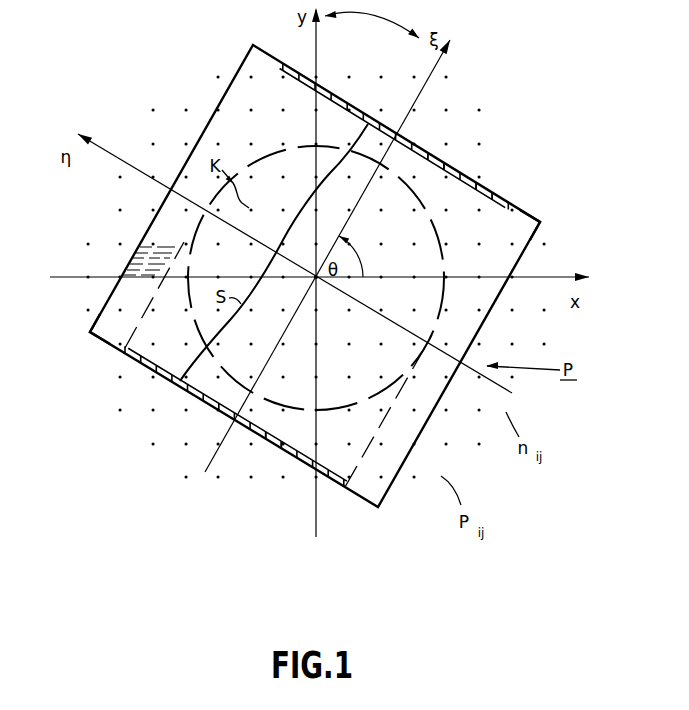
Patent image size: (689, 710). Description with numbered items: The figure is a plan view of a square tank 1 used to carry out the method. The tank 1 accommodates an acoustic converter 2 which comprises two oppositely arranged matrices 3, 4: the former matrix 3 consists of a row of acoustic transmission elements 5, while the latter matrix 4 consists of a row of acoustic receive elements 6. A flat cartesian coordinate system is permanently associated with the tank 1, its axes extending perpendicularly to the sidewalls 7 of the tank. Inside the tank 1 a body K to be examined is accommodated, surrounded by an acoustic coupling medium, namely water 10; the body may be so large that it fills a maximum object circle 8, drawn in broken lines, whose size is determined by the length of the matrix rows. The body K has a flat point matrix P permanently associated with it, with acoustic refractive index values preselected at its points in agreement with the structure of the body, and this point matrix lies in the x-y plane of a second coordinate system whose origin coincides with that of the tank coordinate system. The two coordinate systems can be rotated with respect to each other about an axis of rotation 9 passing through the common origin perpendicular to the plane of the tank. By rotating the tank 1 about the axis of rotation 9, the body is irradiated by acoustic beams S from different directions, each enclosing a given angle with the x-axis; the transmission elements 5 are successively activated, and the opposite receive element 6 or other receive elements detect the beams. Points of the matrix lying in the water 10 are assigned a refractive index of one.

The tank 1 is at (208, 124).
The acoustic converter 2 is at (329, 86).
The matrix 3 is at (343, 487).
The matrix 4 is at (488, 190).
The acoustic transmission elements 5 is at (272, 449).
The acoustic receive elements 6 is at (438, 158).
The sidewalls 7 is at (541, 222).
The maximum object circle 8 is at (248, 164).
The axis of rotation 9 is at (312, 300).
The water 10 is at (140, 240).